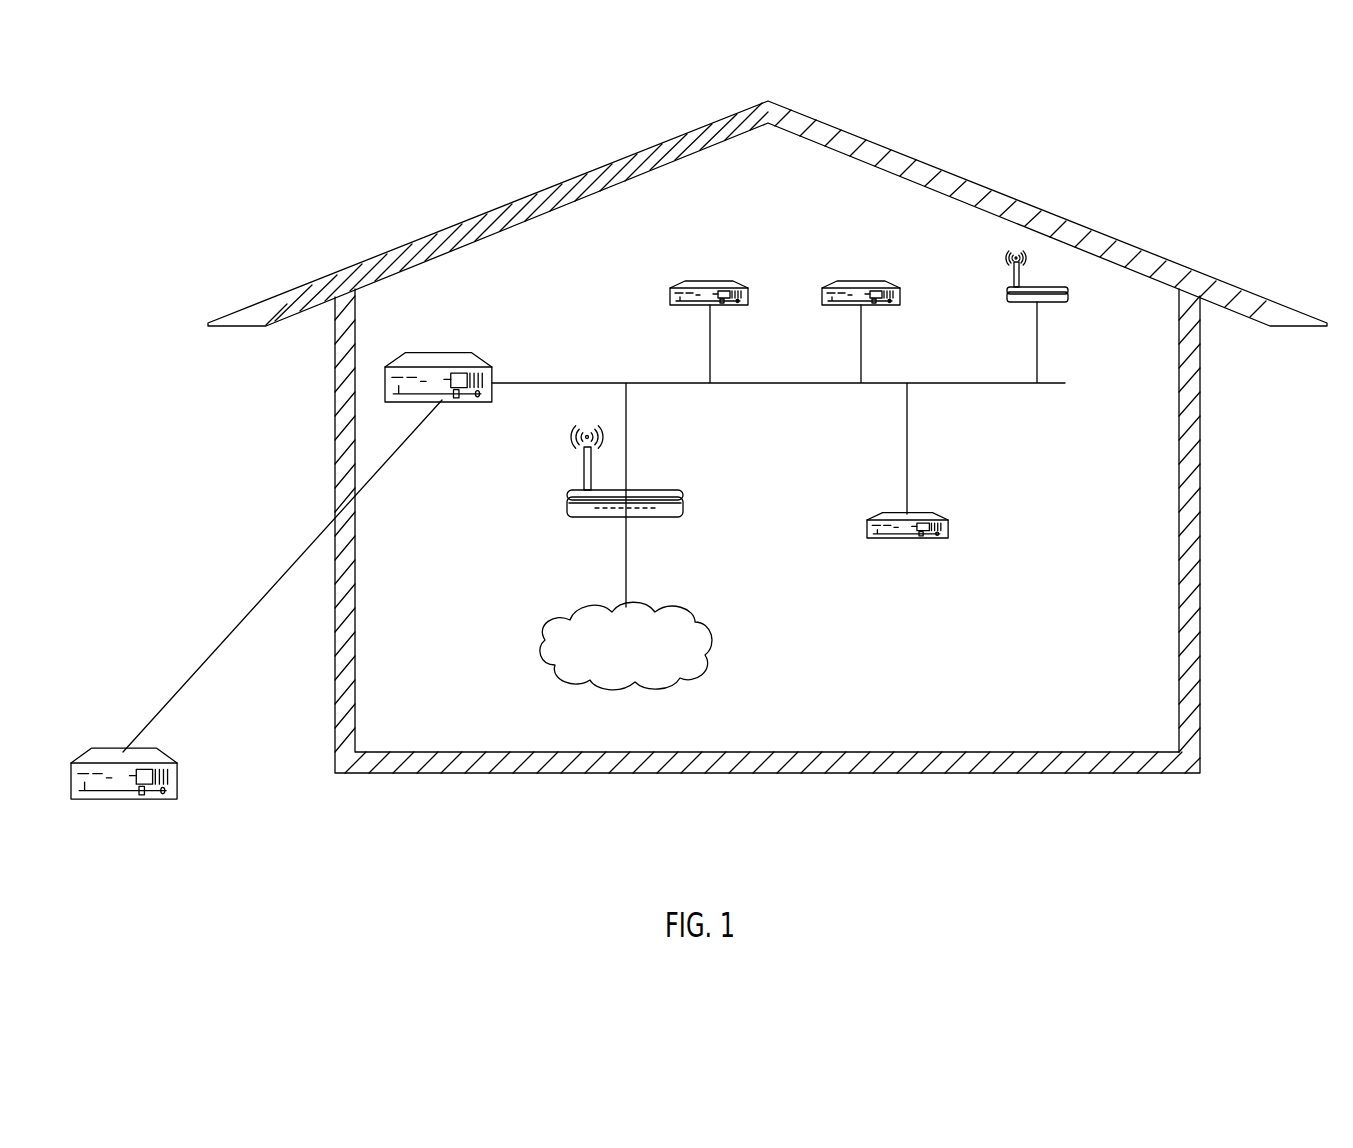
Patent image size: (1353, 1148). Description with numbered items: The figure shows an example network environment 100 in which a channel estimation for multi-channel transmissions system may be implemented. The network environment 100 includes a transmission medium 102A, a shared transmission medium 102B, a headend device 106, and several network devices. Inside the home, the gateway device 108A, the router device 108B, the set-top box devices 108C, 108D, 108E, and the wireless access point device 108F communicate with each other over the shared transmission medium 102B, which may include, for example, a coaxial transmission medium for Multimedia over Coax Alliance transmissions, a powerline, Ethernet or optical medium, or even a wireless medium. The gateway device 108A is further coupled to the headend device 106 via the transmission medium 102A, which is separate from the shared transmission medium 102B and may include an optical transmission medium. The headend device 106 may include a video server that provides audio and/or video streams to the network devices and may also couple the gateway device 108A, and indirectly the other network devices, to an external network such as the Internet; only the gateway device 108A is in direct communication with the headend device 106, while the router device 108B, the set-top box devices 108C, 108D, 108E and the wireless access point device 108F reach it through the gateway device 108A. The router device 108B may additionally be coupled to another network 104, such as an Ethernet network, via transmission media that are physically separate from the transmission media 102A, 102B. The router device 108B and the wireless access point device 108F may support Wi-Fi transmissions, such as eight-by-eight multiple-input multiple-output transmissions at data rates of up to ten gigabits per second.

The network environment 100 is at (1257, 95).
The transmission medium 102A is at (268, 590).
The shared transmission medium 102B is at (753, 383).
The network 104 is at (592, 612).
The headend device 106 is at (177, 782).
The gateway device 108A is at (436, 356).
The router device 108B is at (655, 490).
The set-top box device 108C is at (710, 281).
The set-top box device 108D is at (862, 281).
The set-top box device 108E is at (925, 514).
The wireless access point device 108F is at (1068, 292).